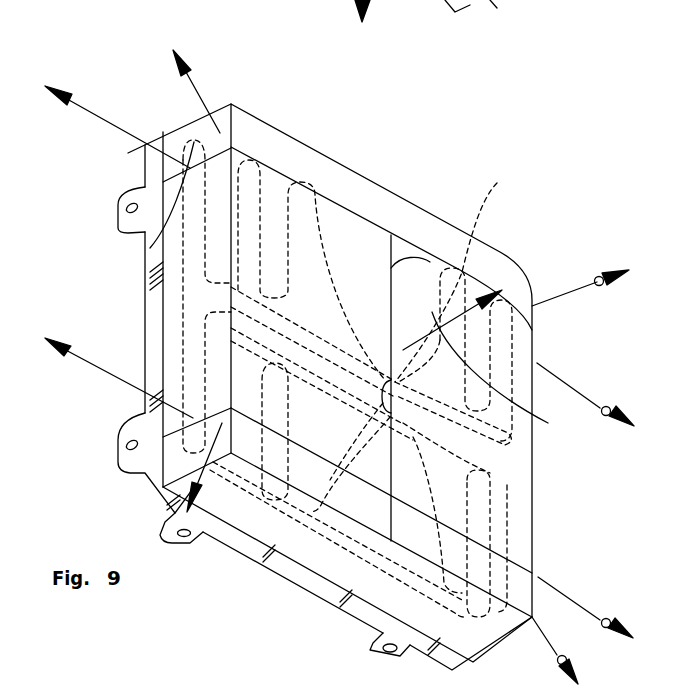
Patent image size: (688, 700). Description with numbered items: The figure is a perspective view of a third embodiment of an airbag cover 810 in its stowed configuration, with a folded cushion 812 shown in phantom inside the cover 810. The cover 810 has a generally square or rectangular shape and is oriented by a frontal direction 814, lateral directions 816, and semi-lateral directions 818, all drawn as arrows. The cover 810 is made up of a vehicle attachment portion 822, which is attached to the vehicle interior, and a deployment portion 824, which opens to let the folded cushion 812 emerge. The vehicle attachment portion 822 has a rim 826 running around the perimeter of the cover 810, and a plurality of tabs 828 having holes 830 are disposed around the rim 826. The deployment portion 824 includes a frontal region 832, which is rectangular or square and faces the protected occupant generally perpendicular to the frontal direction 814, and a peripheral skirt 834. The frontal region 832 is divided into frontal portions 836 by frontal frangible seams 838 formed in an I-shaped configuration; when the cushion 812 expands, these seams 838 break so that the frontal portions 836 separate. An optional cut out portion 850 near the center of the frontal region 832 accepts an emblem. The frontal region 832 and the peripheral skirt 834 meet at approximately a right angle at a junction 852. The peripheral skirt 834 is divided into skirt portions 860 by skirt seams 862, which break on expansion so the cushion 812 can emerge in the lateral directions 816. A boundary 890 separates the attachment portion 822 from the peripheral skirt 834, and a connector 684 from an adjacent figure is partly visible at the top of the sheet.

The airbag cover 810 is at (88, 66).
The folded cushion 812 is at (485, 200).
The frontal direction 814 is at (503, 374).
The lateral directions 816 is at (82, 106).
The semi-lateral directions 818 is at (208, 55).
The vehicle attachment portion 822 is at (155, 132).
The deployment portion 824 is at (182, 132).
The rim 826 is at (152, 290).
The tabs 828 is at (122, 218).
The holes 830 is at (126, 204).
The frontal region 832 is at (348, 172).
The peripheral skirt 834 is at (172, 318).
The frontal portions 836 is at (248, 283).
The frontal frangible seams 838 is at (275, 173).
The cut out portion 850 is at (388, 378).
The junction 852 is at (300, 550).
The skirt portions 860 is at (180, 158).
The skirt seams 862 is at (158, 242).
The boundary 890 is at (263, 540).
The connector 684 is at (497, 0).